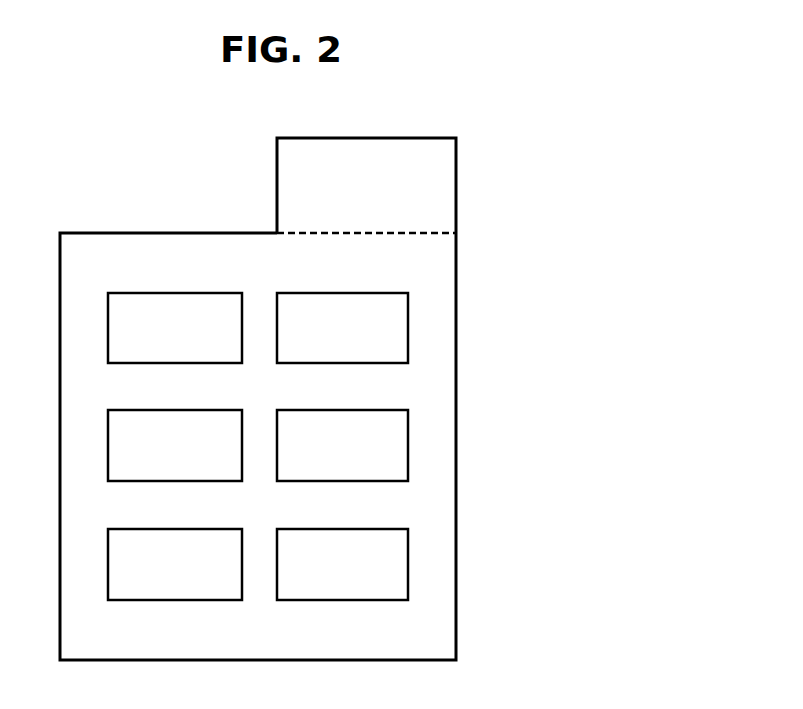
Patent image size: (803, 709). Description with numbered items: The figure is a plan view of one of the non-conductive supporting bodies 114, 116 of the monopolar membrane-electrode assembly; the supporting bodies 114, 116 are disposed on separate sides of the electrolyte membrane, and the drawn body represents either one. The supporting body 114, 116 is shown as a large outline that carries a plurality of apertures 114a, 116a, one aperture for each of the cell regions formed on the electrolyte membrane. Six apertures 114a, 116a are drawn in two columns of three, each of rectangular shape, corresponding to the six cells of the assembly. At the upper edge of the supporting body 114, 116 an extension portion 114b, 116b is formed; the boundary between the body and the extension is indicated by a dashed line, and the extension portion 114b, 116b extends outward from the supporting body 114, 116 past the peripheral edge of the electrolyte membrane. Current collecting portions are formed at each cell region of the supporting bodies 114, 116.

The non-conductive supporting body 114 is at (456, 322).
The aperture 114a is at (397, 445).
The extension portion 114b is at (437, 168).
The non-conductive supporting body 116 is at (343, 446).
The aperture 116a is at (365, 446).
The extension portion 116b is at (455, 185).